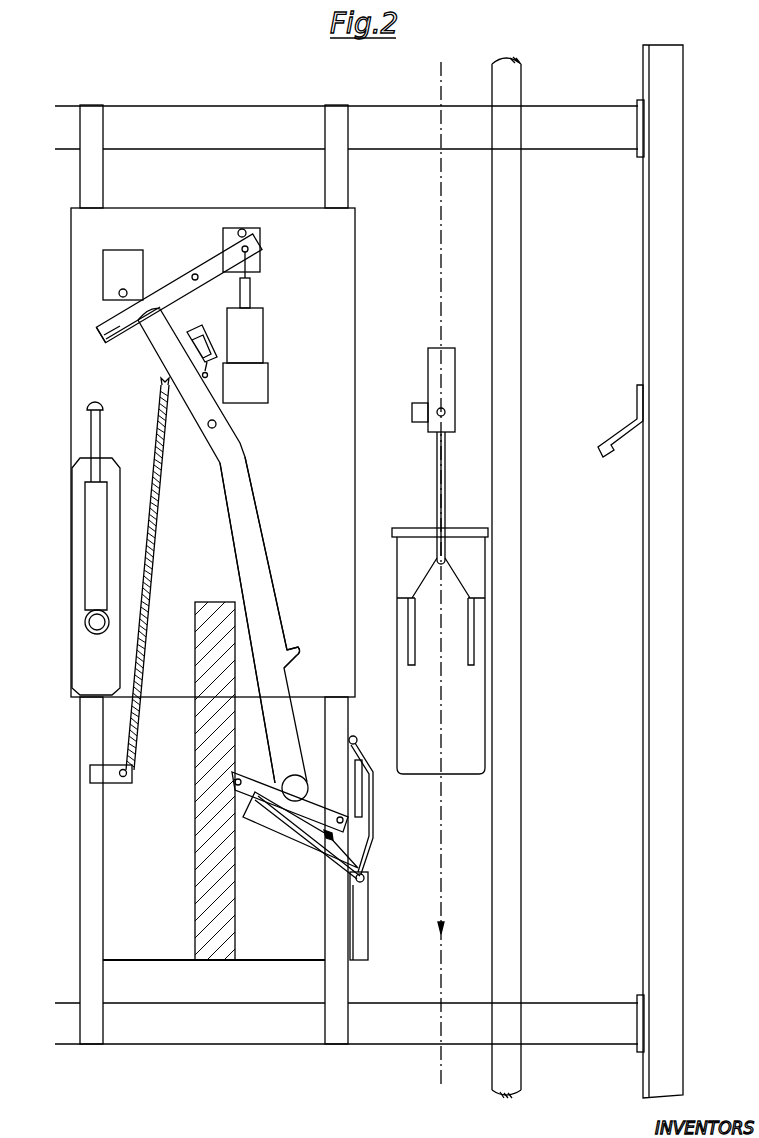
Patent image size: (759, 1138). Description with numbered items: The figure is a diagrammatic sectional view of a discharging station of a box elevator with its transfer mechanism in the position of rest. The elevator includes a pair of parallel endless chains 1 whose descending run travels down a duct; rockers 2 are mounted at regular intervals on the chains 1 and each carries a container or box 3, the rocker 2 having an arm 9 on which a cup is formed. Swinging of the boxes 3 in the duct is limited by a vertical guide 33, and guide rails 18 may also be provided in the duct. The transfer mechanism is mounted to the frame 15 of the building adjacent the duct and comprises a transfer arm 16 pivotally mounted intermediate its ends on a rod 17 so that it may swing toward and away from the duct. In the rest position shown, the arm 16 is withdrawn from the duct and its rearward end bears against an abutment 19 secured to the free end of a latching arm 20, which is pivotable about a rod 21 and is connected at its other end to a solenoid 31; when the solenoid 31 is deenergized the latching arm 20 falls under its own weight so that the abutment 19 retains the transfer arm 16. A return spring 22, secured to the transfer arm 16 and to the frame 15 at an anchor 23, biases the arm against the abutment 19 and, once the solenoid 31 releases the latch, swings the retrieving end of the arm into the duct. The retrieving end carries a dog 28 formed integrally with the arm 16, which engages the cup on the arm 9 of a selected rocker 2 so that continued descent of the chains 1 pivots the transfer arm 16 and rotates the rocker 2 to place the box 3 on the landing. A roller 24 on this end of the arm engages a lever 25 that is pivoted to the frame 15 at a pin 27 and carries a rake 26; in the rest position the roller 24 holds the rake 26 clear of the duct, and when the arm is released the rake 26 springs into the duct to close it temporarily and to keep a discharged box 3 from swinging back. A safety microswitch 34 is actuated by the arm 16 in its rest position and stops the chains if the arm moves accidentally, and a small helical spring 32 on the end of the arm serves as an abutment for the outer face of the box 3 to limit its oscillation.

The endless chains 1 is at (441, 983).
The rocker 2 is at (437, 395).
The container or box 3 is at (473, 702).
The arm of the rocker 9 is at (443, 505).
The frame 15 is at (71, 247).
The transfer arm 16 is at (277, 621).
The rod 17 is at (208, 430).
The guide rails 18 is at (403, 160).
The abutment 19 is at (118, 341).
The latching arm 20 is at (113, 324).
The rod 21 is at (187, 278).
The return spring 22 is at (124, 719).
The anchor block 23 is at (88, 776).
The roller 24 is at (292, 785).
The lever 25 is at (295, 838).
The rake 26 is at (386, 815).
The pin 27 is at (352, 883).
The dog 28 is at (298, 651).
The solenoid 31 is at (263, 333).
The helical spring 32 is at (327, 842).
The vertical guide 33 is at (508, 942).
The safety microswitch 34 is at (187, 359).